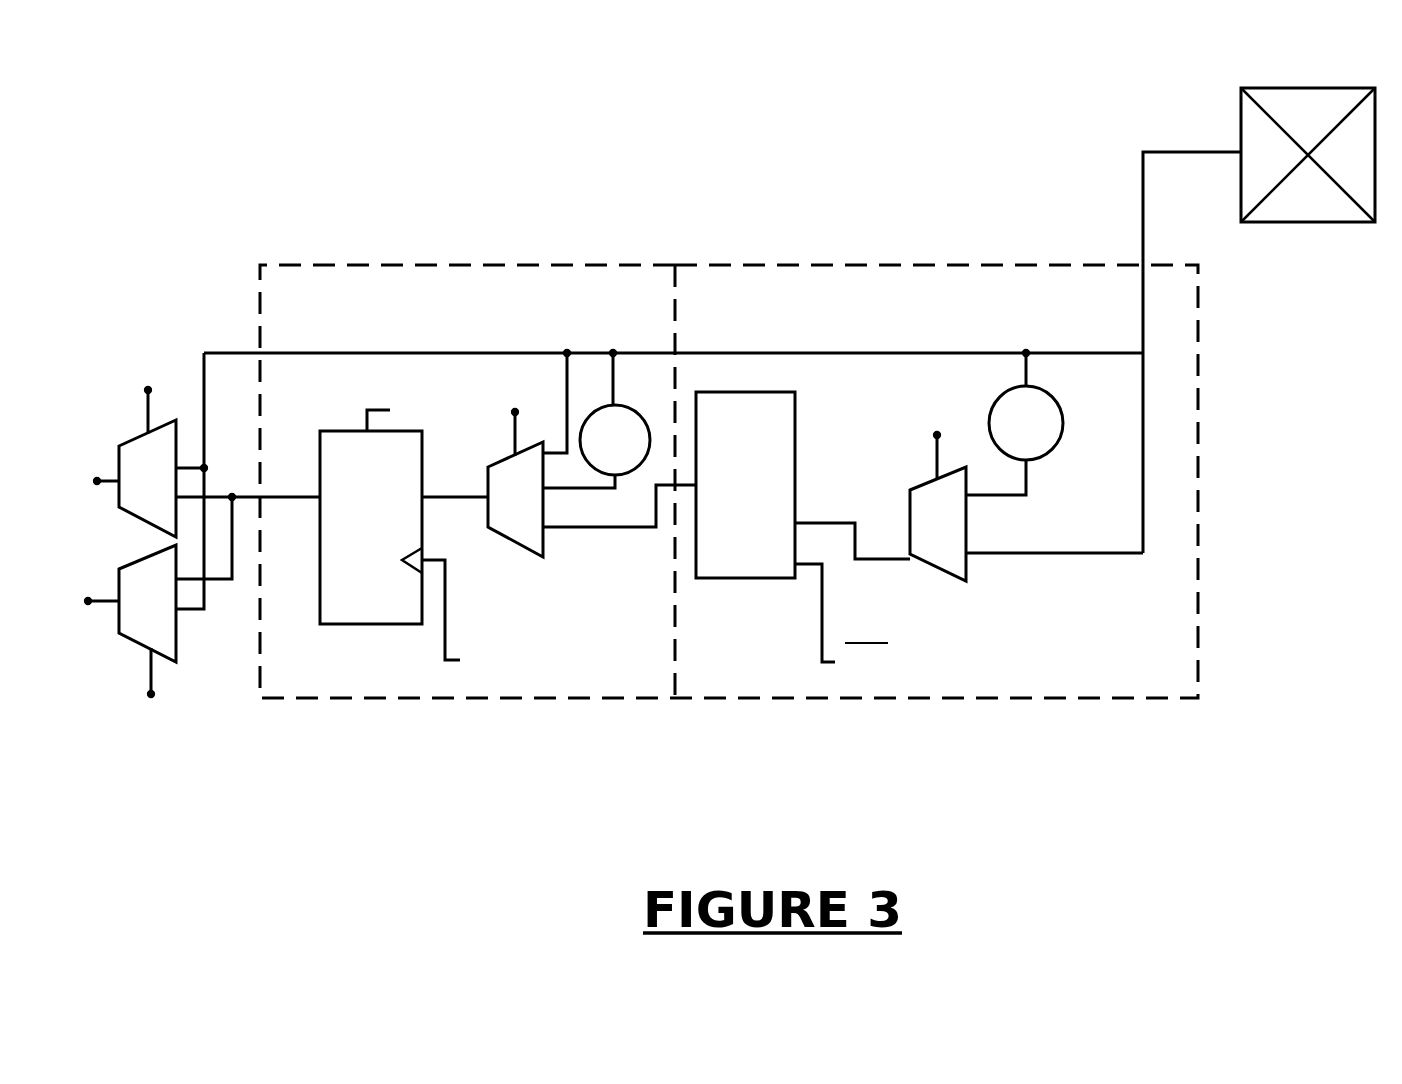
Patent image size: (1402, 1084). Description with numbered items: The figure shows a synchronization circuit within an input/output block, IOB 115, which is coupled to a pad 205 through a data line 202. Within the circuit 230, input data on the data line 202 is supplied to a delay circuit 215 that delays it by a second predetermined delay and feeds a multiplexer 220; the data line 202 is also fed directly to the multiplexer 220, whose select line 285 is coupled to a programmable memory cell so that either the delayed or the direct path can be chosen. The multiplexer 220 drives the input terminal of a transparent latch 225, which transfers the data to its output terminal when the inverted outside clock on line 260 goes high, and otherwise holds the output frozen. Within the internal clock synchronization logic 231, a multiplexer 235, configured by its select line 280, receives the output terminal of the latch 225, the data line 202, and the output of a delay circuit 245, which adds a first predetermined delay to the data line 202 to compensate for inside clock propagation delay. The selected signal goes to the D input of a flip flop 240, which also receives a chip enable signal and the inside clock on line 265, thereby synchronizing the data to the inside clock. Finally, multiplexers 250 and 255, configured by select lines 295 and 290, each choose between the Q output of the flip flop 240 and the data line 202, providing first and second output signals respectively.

The IOB 115 is at (177, 220).
The select line 295 is at (146, 404).
The multiplexer 250 is at (146, 518).
The multiplexer 255 is at (178, 636).
The select signal for multiplexer 255 290 is at (148, 682).
The flip flop 240 is at (384, 624).
The clock signal line 265 is at (446, 612).
The select line 280 is at (510, 412).
The multiplexer 235 is at (514, 522).
The delay circuit 245 is at (645, 388).
The transparent latch circuit 225 is at (764, 578).
The clock signal line 260 is at (823, 610).
The multiplexer 220 is at (958, 572).
The select line 285 is at (924, 432).
The delay circuit 215 is at (1040, 446).
The data line 202 is at (1140, 242).
The pad 205 is at (1314, 205).
The internal clock synchronization logic 231 is at (606, 678).
The circuit 230 is at (1121, 684).